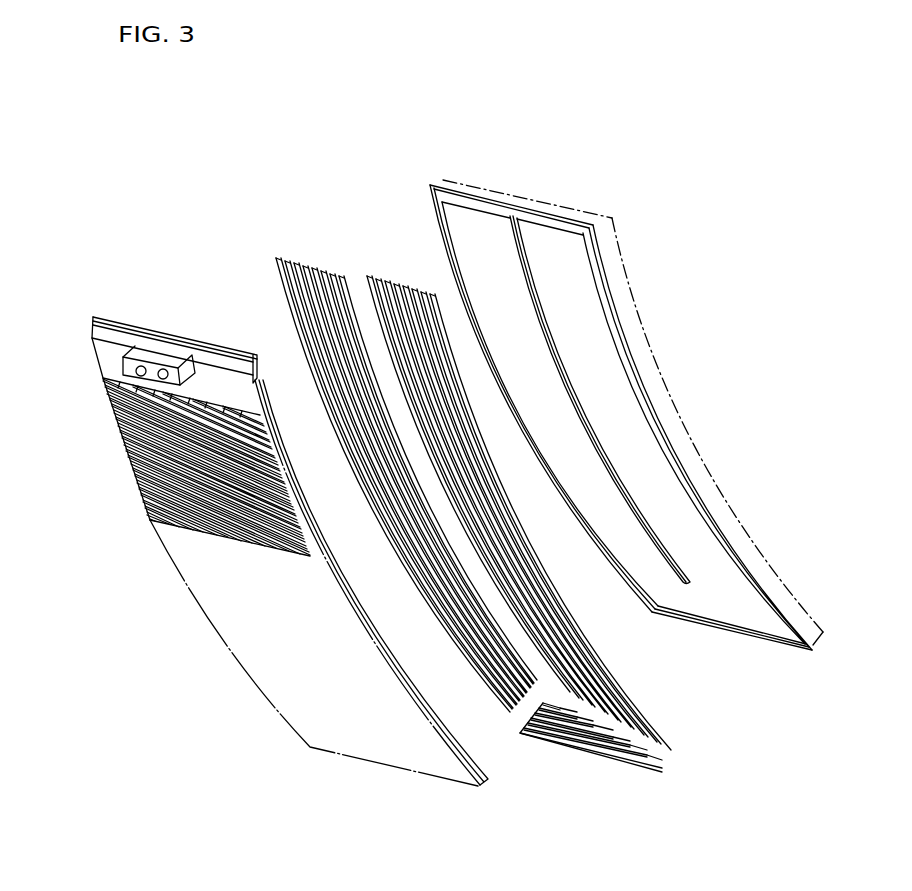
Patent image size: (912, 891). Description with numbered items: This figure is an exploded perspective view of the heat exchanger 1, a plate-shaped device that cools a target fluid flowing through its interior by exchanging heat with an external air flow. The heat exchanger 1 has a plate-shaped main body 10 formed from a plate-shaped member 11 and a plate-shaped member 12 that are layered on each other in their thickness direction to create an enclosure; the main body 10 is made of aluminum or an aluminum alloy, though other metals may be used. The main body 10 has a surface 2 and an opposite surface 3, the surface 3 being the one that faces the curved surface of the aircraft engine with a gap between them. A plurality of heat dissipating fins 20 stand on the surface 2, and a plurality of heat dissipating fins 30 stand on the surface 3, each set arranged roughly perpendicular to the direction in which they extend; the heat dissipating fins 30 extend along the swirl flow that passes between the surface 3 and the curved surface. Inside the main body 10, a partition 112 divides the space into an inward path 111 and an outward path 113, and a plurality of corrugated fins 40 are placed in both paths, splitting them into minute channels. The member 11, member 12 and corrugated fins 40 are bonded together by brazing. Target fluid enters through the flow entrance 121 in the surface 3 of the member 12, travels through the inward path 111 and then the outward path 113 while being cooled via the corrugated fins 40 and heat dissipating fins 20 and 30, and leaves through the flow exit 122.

The heat exchanger 1 is at (322, 103).
The surface 2 is at (618, 305).
The surface 3 is at (118, 358).
The main body 10 is at (206, 221).
The plate-shaped member 11 is at (524, 184).
The plate-shaped member 12 is at (171, 315).
The heat dissipating fins 20 is at (664, 386).
The heat dissipating fins 30 is at (130, 462).
The corrugated fins 40 is at (307, 254).
The inward path 111 is at (604, 341).
The partition 112 is at (633, 513).
The outward path 113 is at (470, 262).
The flow entrance 121 is at (160, 378).
The flow exit 122 is at (134, 372).